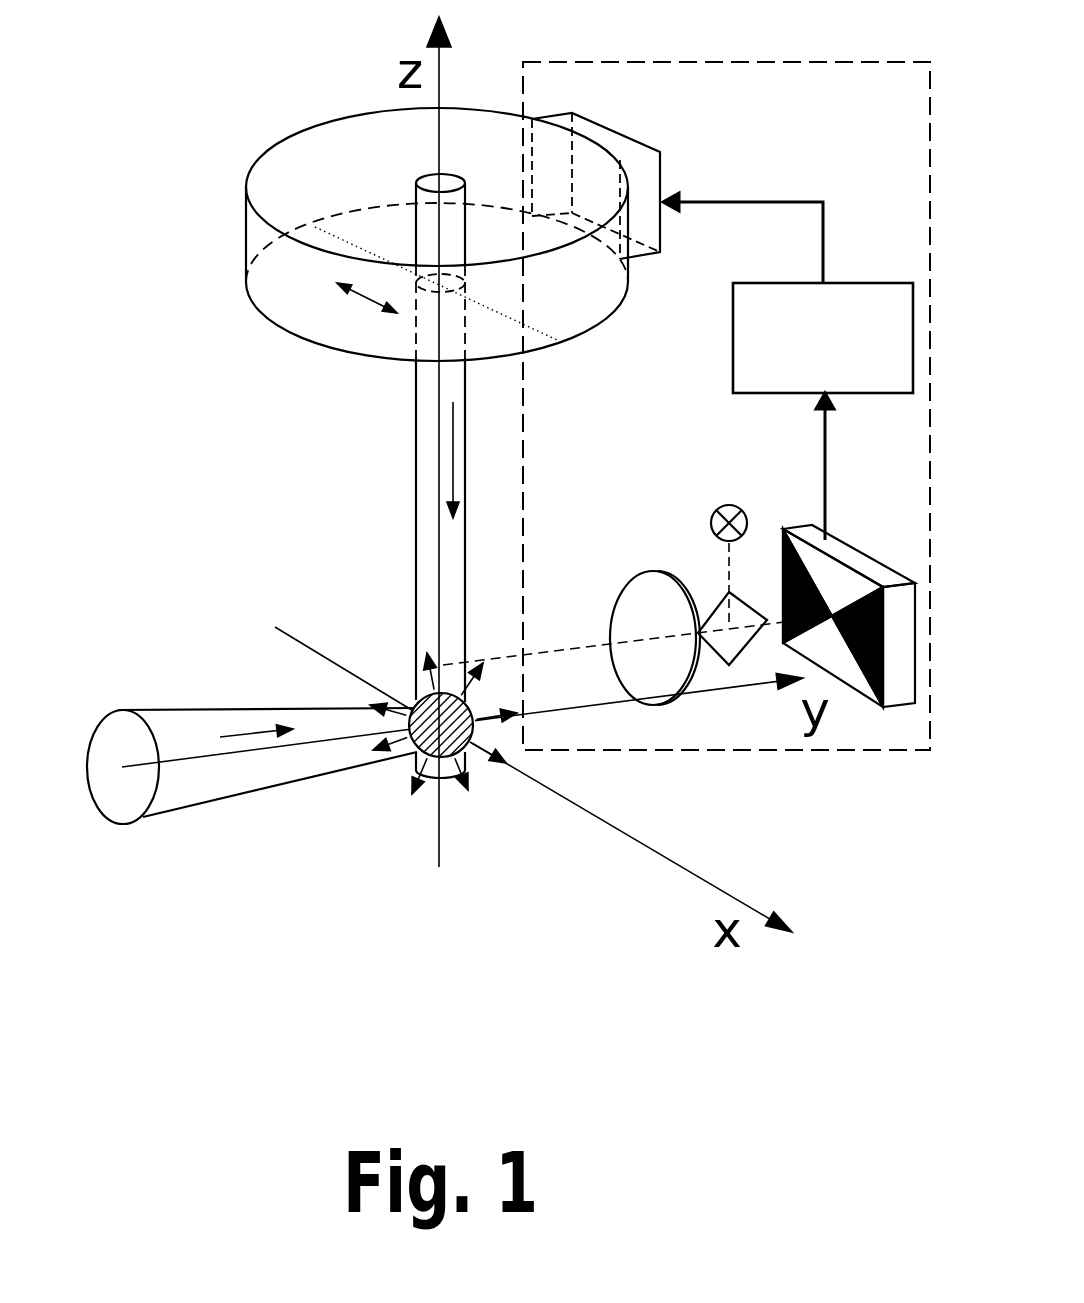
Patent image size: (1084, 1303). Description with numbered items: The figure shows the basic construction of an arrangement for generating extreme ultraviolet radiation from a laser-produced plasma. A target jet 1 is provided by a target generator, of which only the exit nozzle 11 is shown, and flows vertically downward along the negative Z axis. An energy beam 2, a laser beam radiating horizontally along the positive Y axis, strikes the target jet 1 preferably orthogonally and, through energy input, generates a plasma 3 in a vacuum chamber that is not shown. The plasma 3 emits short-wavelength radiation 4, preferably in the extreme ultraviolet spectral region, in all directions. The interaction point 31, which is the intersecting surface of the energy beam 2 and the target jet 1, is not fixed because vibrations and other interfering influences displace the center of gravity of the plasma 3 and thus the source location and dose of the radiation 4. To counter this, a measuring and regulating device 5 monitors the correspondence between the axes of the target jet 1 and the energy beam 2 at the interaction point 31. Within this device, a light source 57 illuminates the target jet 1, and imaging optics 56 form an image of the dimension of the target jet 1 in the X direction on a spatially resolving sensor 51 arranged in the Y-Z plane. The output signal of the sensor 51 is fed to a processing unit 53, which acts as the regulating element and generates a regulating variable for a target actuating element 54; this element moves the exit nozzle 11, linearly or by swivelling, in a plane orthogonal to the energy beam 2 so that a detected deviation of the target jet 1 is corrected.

The target jet 1 is at (430, 483).
The exit nozzle 11 is at (245, 220).
The energy beam 2 is at (253, 717).
The plasma 3 is at (424, 698).
The interaction point 31 is at (418, 757).
The short-wavelength radiation 4 is at (425, 775).
The measuring and regulating device 5 is at (745, 752).
The sensor 51 is at (852, 558).
The processing unit 53 is at (853, 297).
The target actuating element 54 is at (652, 167).
The imaging optics 56 is at (628, 595).
The light source 57 is at (723, 505).